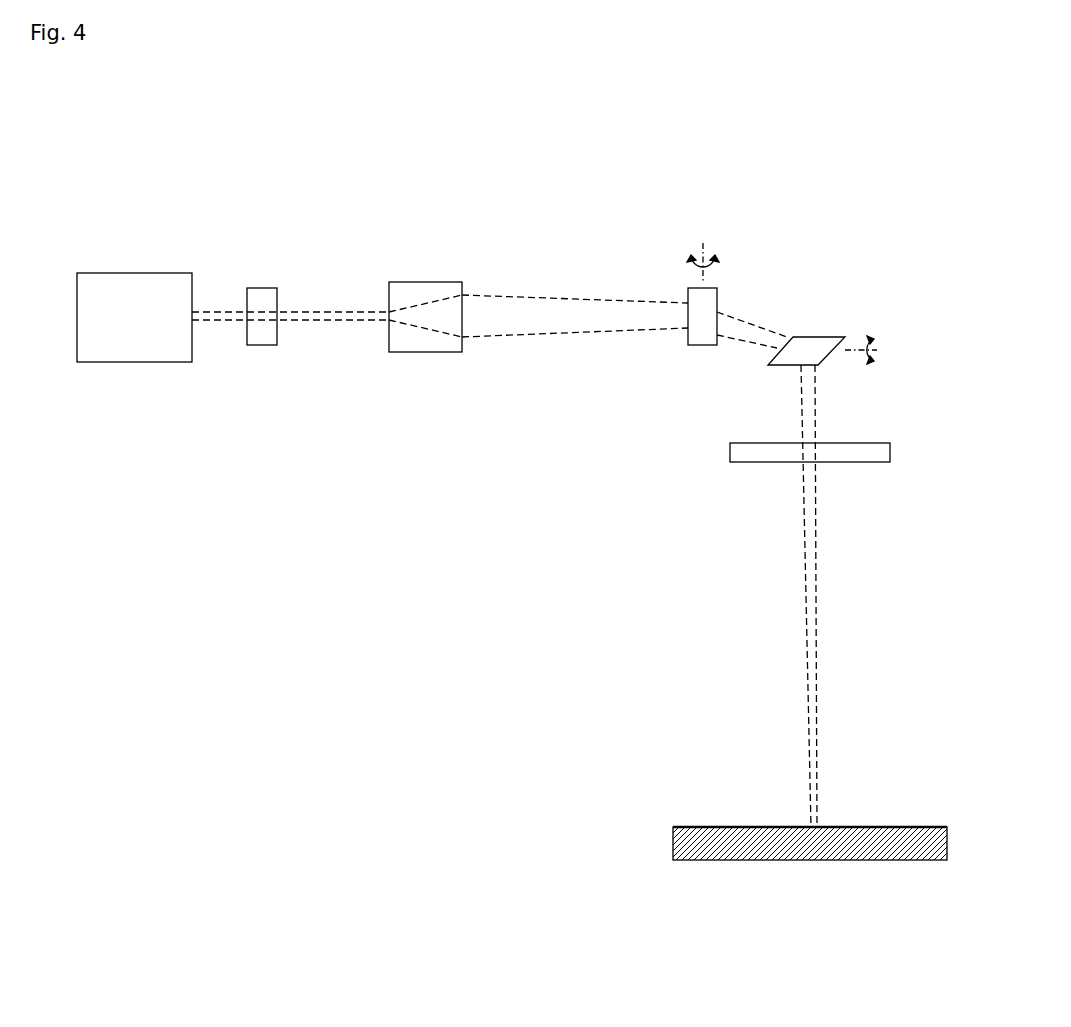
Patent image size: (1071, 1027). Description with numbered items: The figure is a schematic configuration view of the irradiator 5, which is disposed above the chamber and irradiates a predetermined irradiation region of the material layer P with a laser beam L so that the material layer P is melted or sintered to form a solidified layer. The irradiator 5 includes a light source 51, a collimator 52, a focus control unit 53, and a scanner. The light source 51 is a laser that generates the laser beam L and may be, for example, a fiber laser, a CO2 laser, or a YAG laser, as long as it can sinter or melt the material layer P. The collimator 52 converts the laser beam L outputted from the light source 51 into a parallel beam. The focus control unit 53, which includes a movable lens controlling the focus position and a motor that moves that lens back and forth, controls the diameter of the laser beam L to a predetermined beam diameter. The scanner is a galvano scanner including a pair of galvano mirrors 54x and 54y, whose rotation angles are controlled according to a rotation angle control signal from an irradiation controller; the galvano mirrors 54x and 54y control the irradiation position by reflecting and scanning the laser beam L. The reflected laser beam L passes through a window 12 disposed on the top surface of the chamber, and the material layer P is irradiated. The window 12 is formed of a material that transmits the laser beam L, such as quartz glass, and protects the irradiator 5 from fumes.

The irradiator 5 is at (876, 182).
The light source 51 is at (148, 285).
The collimator 52 is at (260, 335).
The focus control unit 53 is at (410, 345).
The galvano mirror 54x is at (697, 337).
The galvano mirror 54y is at (822, 342).
The window 12 is at (750, 455).
The laser beam L is at (808, 567).
The material layer P is at (722, 840).